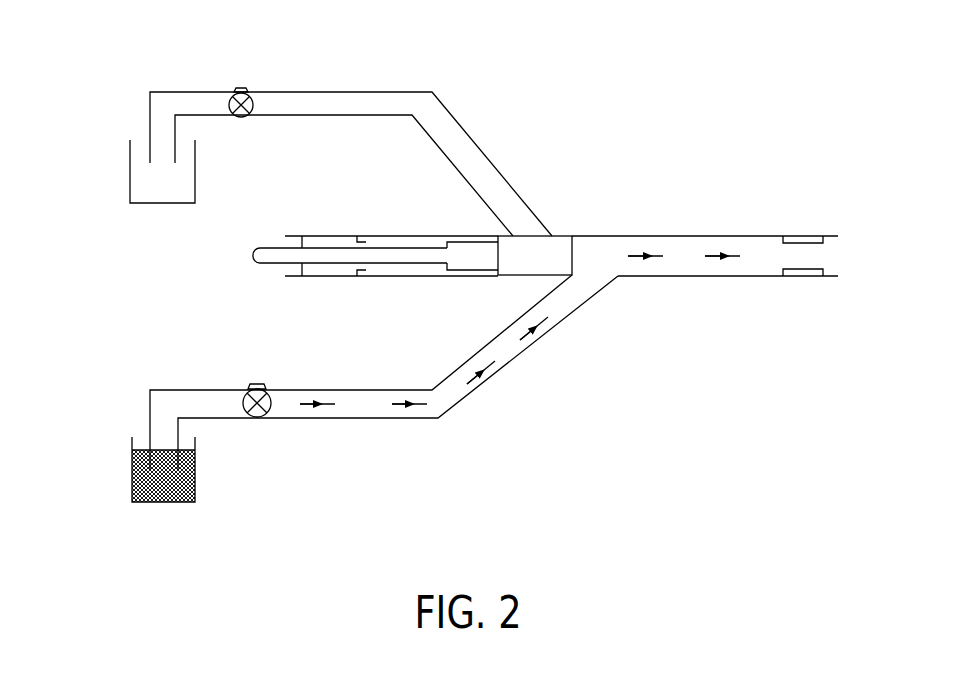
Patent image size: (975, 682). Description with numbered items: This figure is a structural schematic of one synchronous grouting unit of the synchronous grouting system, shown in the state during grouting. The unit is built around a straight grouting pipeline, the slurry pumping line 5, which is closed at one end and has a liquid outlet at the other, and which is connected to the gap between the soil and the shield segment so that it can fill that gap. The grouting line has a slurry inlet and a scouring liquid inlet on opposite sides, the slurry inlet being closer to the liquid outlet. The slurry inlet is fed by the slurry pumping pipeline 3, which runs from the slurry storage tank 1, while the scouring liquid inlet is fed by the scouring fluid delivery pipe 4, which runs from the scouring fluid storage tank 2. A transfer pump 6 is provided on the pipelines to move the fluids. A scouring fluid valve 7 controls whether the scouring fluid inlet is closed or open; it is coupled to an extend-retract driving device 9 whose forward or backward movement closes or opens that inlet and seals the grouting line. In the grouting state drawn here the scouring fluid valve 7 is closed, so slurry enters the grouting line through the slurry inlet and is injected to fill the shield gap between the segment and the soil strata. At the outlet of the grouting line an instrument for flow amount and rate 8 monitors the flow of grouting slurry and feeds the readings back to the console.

The slurry storage tank 1 is at (160, 493).
The scouring fluid storage tank 2 is at (160, 186).
The slurry pumping pipeline 3 is at (357, 409).
The scouring fluid delivery pipe 4 is at (360, 103).
The slurry pumping line 5 is at (685, 263).
The transfer pump 6 is at (247, 84).
The scouring fluid valve 7 is at (545, 245).
The instrument for flow amount and rate 8 is at (808, 236).
The extend-retract driving device 9 is at (297, 260).